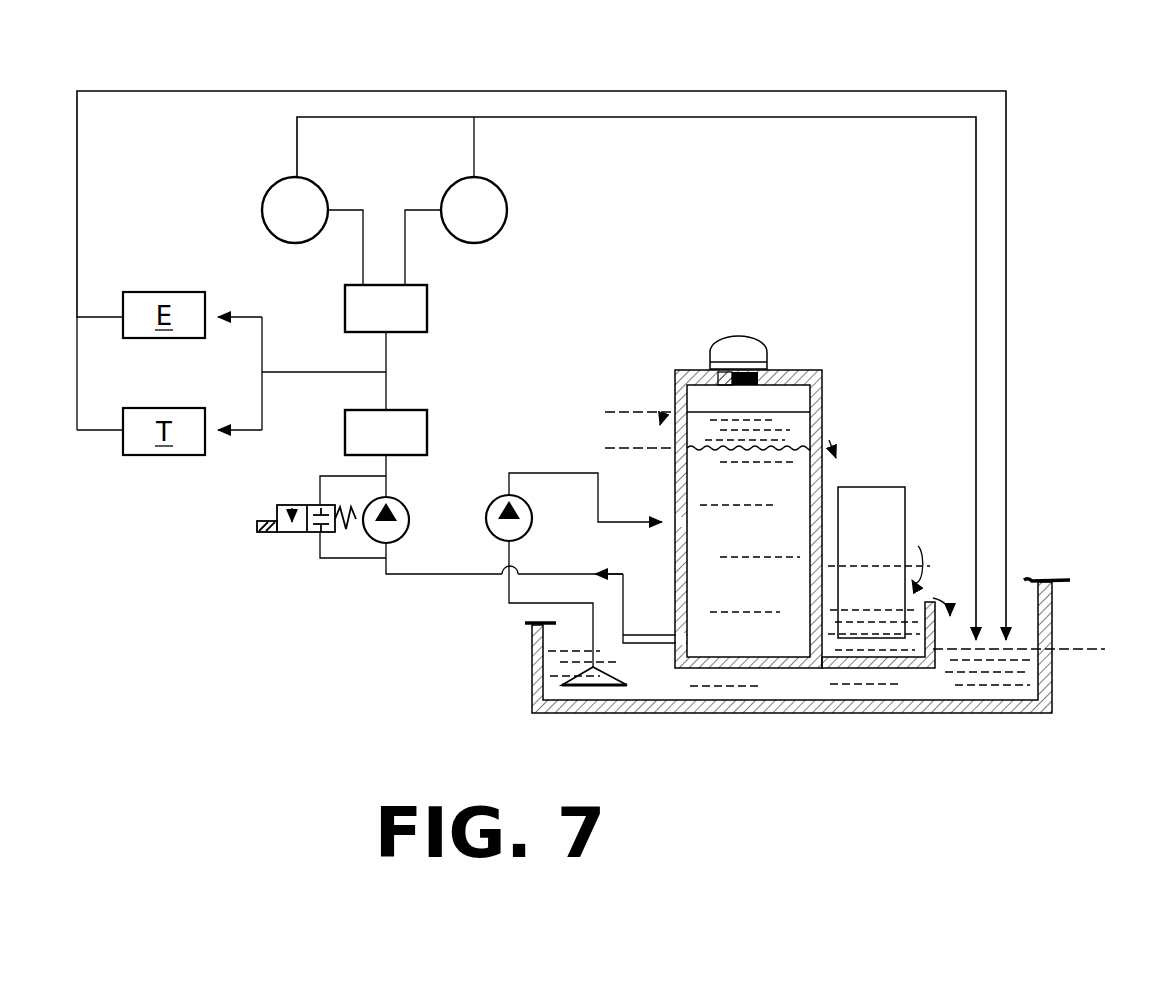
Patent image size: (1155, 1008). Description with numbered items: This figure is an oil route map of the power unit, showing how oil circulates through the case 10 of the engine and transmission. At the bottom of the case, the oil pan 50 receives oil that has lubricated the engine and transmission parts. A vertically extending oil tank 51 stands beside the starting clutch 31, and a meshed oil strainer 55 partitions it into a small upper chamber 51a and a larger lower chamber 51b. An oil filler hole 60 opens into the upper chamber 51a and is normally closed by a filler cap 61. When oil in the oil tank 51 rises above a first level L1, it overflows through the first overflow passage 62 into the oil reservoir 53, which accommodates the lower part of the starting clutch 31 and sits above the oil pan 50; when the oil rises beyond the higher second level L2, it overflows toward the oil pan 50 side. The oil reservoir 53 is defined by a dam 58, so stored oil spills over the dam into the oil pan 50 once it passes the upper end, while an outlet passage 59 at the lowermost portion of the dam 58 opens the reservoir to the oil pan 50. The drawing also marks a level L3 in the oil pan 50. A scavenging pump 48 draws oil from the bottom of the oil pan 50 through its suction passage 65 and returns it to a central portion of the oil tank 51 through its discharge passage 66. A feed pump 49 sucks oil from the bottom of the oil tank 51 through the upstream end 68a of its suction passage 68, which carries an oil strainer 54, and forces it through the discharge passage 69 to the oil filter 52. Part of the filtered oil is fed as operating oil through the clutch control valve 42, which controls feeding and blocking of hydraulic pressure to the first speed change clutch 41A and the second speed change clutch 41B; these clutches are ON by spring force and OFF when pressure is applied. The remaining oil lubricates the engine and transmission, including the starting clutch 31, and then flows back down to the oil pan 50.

The case 10 is at (1065, 600).
The starting clutch 31 is at (888, 520).
The first speed change clutch 41A is at (274, 224).
The second speed change clutch 41B is at (453, 224).
The clutch control valve 42 is at (369, 325).
The scavenging pump 48 is at (533, 518).
The feed pump 49 is at (410, 521).
The oil pan 50 is at (775, 690).
The oil tank 51 is at (827, 510).
The upper chamber 51a is at (790, 395).
The lower chamber 51b is at (808, 534).
The oil filter 52 is at (369, 449).
The oil reservoir 53 is at (875, 647).
The oil strainer 54 is at (595, 688).
The meshed oil strainer 55 is at (707, 452).
The dam 58 is at (935, 630).
The outlet passage 59 is at (912, 655).
The oil filler hole 60 is at (730, 365).
The filler cap 61 is at (752, 352).
The first overflow passage 62 is at (823, 437).
The suction passage 65 is at (528, 610).
The discharge passage 66 is at (612, 521).
The suction passage 68 is at (420, 577).
The upstream end 68a is at (690, 629).
The discharge passage 69 is at (388, 464).
The first level L1 is at (630, 448).
The second level L2 is at (632, 412).
The tank liquid level L3 is at (1066, 645).